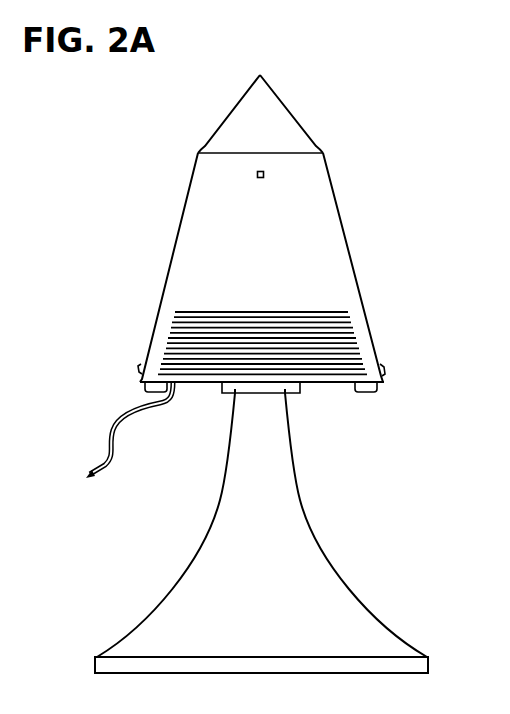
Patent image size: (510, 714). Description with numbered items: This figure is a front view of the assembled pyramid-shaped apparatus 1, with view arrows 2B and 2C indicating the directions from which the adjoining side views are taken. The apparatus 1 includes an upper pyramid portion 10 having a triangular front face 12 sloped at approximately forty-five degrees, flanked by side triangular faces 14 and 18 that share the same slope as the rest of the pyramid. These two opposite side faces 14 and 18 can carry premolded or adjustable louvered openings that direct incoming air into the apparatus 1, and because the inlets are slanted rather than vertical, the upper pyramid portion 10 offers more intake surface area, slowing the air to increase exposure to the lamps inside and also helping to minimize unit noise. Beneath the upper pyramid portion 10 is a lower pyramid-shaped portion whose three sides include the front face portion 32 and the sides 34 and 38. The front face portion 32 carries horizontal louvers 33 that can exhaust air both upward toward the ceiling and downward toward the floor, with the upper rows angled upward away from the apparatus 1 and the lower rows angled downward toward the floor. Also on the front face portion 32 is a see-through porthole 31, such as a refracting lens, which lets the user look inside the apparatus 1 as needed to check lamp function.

The apparatus 1 is at (373, 92).
The upper pyramid portion 10 is at (198, 127).
The triangular front face 12 is at (273, 137).
The side triangular face 14 is at (231, 107).
The side triangular face 18 is at (291, 108).
The see-through porthole 31 is at (263, 174).
The front face portion 32 is at (308, 280).
The horizontal louvers 33 is at (350, 347).
The side 34 is at (169, 269).
The side 38 is at (350, 251).
The section view 2B direction 2B is at (257, 48).
The section view 2C direction 2C is at (350, 187).